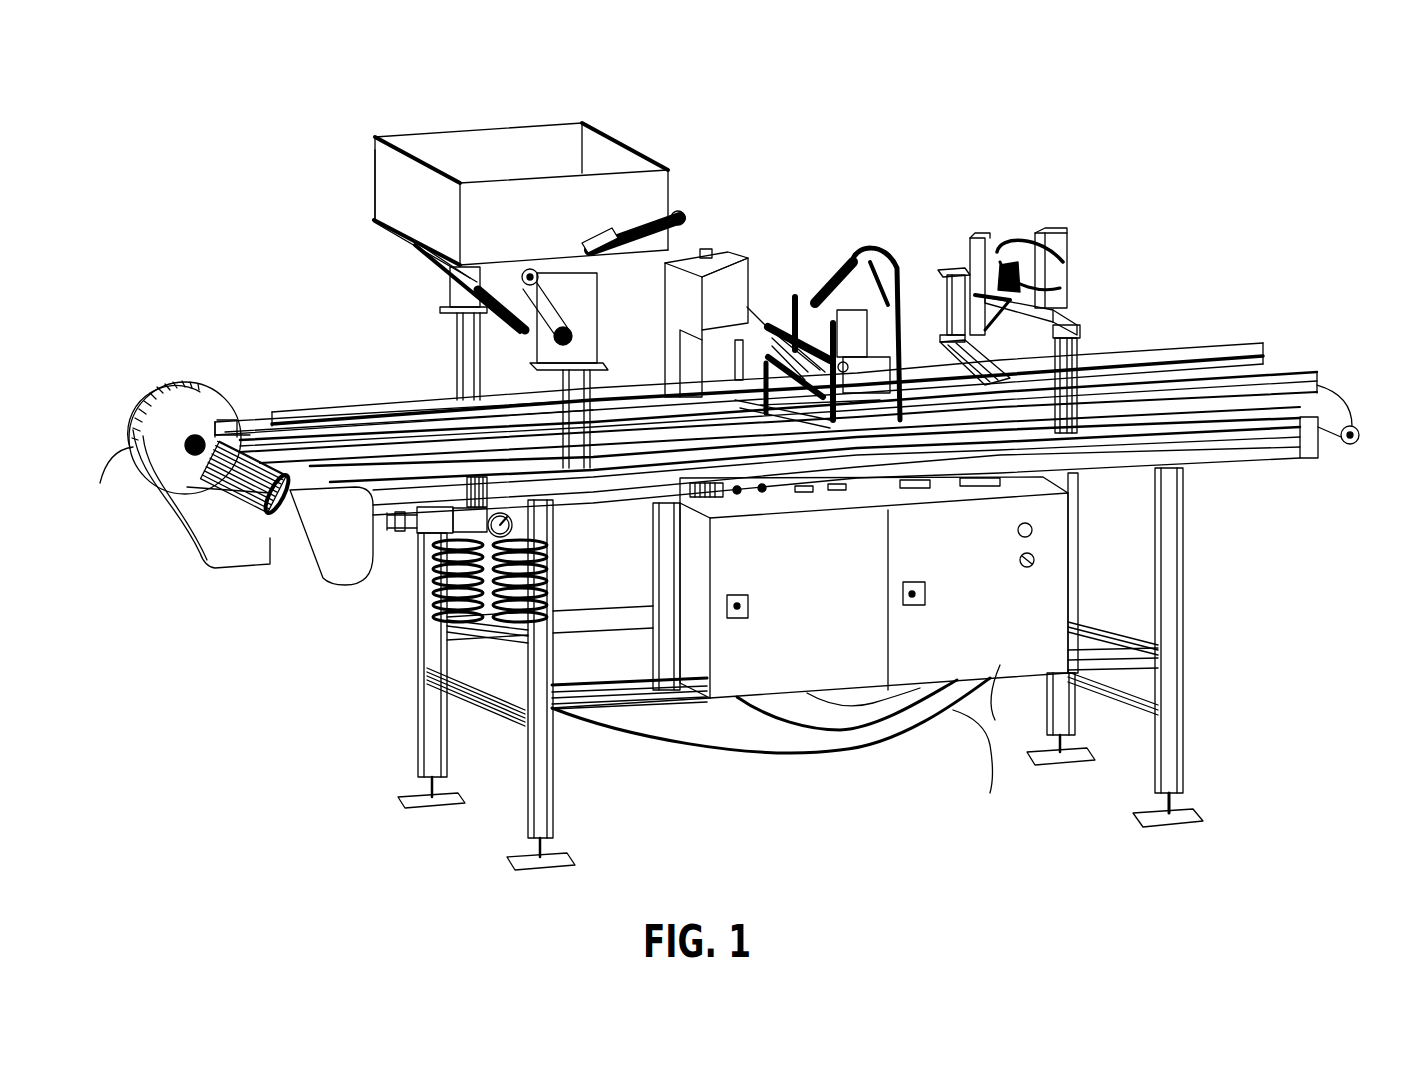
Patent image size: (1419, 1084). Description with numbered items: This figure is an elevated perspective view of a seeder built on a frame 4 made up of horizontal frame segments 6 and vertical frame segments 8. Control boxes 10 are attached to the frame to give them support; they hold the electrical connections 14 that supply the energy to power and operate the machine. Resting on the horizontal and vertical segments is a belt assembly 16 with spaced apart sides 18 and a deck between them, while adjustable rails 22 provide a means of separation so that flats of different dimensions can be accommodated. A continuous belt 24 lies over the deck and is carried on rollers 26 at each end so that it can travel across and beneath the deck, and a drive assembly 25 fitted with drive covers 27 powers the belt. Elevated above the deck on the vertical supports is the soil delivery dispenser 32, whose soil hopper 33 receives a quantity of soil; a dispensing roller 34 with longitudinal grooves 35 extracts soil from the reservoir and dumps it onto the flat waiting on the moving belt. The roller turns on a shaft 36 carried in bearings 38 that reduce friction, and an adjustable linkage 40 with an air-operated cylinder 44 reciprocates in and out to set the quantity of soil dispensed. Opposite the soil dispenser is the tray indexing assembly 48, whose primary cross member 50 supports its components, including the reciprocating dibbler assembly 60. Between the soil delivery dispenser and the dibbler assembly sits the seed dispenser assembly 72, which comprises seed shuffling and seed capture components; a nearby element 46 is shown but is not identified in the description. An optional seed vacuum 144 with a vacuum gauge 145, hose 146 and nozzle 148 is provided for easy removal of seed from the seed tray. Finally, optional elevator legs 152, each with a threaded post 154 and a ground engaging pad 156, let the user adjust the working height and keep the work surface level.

The frame 4 is at (1187, 587).
The horizontal frame segments 6 is at (1257, 443).
The vertical frame segments 8 is at (430, 722).
The control boxes 10 is at (757, 652).
The electrical connections 14 is at (940, 688).
The belt assembly 16 is at (183, 382).
The sides 18 is at (1217, 377).
The adjustable rails 22 is at (1227, 383).
The continuous belt 24 is at (363, 460).
The drive assembly 25 is at (300, 547).
The rollers 26 is at (1322, 460).
The drive covers 27 is at (172, 438).
The soil delivery dispenser 32 is at (393, 183).
The soil hopper 33 is at (387, 207).
The dispensing roller 34 is at (453, 327).
The longitudinal grooves 35 is at (480, 303).
The shaft 36 is at (740, 260).
The bearings 38 is at (577, 343).
The adjustable linkage 40 is at (640, 228).
The cylinder 44 is at (563, 267).
The pressing station 46 is at (750, 288).
The tray indexing assembly 48 is at (1067, 228).
The primary cross member 50 is at (1077, 322).
The reciprocating dibbler assembly 60 is at (950, 268).
The seed dispenser assembly 72 is at (873, 250).
The seed vacuum 144 is at (518, 530).
The vacuum gauge 145 is at (433, 553).
The hose 146 is at (453, 613).
The nozzle 148 is at (520, 530).
The elevator legs 152 is at (1180, 802).
The threaded posts 154 is at (1163, 800).
The ground engaging pads 156 is at (1187, 807).